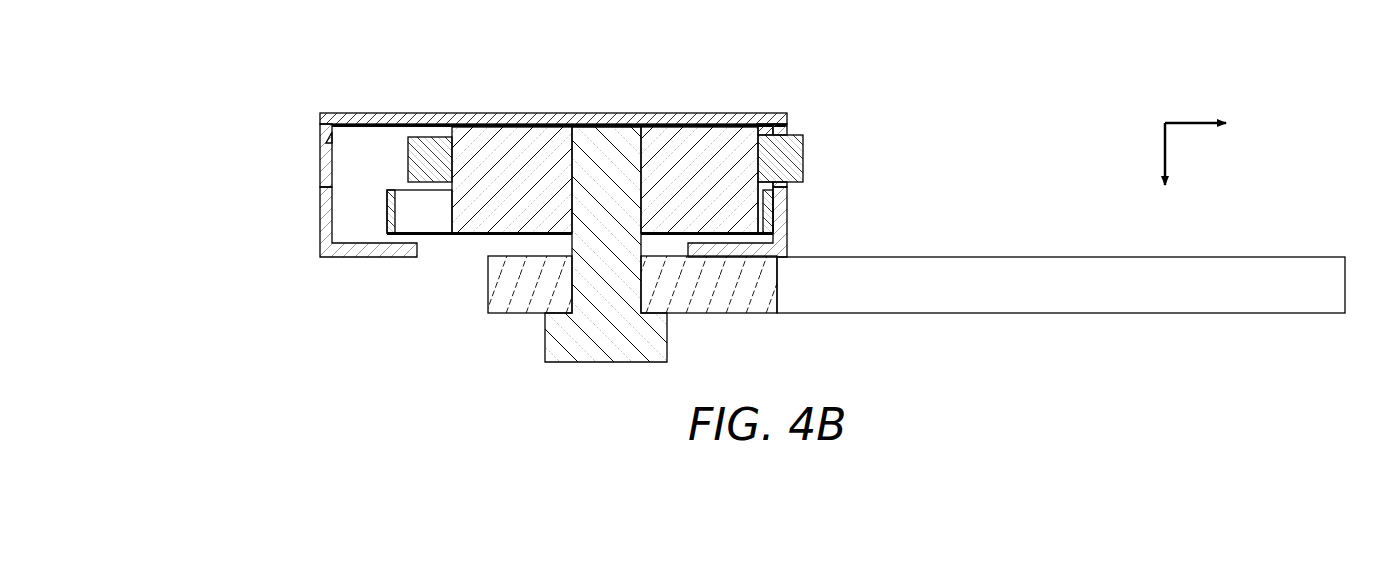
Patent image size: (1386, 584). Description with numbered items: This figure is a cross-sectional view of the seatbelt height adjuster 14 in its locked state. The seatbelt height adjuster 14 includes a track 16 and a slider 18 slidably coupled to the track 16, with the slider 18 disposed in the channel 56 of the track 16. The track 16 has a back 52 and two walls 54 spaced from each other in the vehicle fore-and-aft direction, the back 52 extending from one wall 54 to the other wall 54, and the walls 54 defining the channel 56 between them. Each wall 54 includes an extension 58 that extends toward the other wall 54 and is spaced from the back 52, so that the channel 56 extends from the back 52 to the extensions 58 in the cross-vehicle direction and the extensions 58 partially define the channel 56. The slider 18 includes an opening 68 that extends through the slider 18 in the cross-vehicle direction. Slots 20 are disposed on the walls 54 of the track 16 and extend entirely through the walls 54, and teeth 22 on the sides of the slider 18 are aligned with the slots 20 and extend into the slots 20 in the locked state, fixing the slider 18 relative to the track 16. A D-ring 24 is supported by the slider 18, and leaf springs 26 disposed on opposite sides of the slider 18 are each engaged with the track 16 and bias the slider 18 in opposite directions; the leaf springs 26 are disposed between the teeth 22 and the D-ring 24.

The seatbelt height adjuster 14 is at (958, 65).
The track 16 is at (470, 110).
The slider 18 is at (685, 145).
The slots 20 is at (320, 147).
The teeth 22 is at (422, 137).
The D-ring 24 is at (1072, 315).
The leaf springs 26 is at (387, 217).
The back 52 is at (555, 113).
The walls 54 is at (320, 213).
The channel 56 is at (492, 243).
The extensions 58 is at (365, 258).
The opening 68 is at (572, 285).